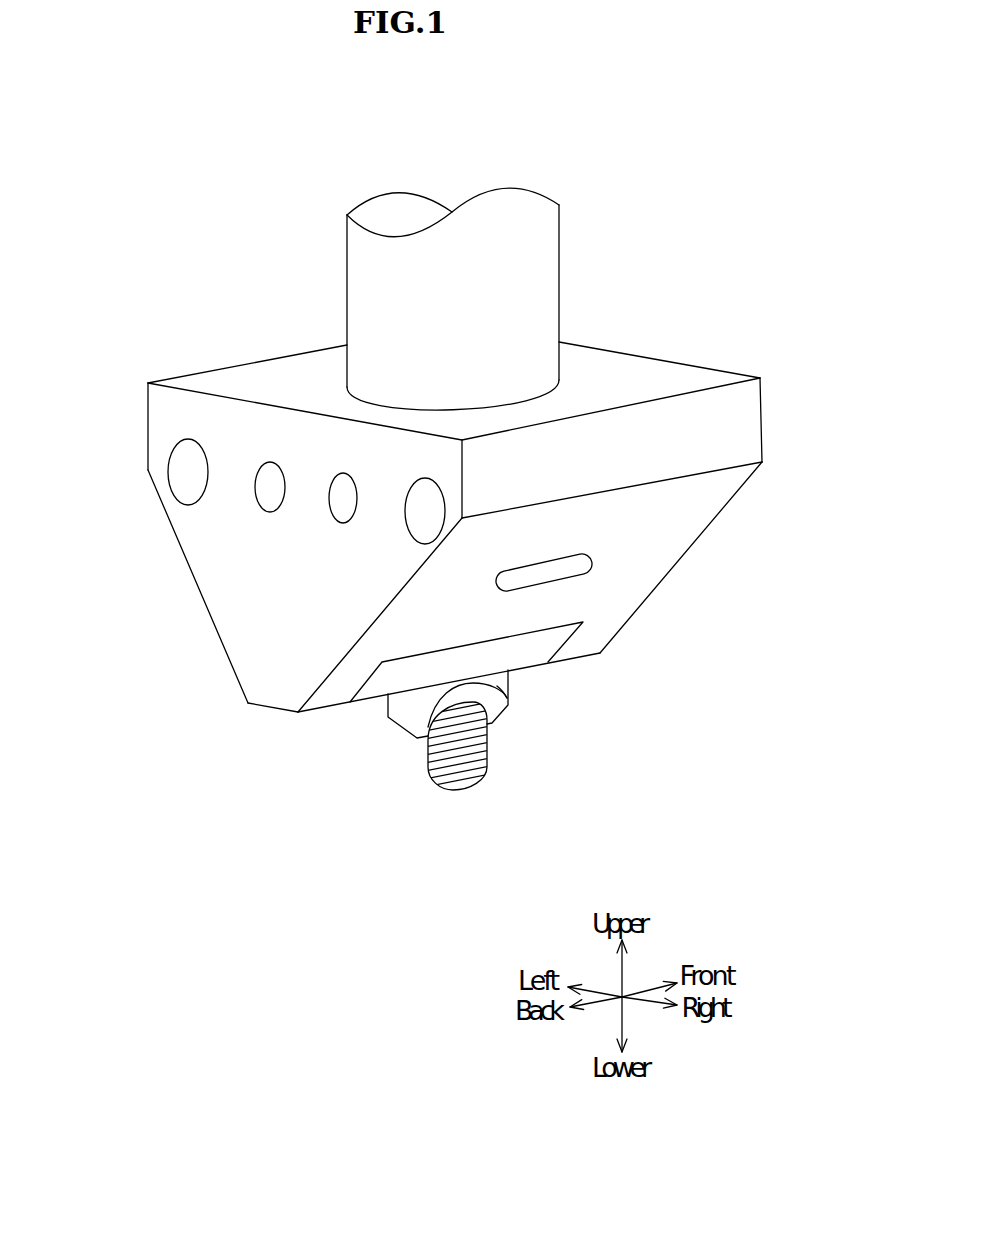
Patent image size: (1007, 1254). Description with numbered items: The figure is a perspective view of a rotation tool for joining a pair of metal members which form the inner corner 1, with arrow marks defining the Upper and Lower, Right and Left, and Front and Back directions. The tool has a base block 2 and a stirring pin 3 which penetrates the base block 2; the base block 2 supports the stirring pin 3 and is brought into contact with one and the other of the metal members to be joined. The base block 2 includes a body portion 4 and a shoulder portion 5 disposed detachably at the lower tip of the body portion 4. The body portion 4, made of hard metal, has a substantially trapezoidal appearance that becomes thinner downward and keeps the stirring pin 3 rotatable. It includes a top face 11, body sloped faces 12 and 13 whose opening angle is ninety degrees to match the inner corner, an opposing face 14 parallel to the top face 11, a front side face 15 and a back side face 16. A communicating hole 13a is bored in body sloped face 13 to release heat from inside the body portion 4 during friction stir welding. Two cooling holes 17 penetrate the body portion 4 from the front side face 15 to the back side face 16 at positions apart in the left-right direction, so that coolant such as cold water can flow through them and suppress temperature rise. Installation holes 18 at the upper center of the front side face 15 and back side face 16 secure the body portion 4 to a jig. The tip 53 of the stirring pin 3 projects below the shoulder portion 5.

The rotation tool for joining a pair of metal members which form the inner corner 1 is at (683, 238).
The base block 2 is at (773, 410).
The stirring pin 3 is at (566, 287).
The body portion 4 is at (680, 523).
The shoulder portion 5 is at (505, 683).
The top face 11 is at (217, 382).
The body sloped face 12 is at (208, 563).
The body sloped face 13 is at (648, 592).
The communicating hole 13a is at (570, 570).
The opposing face 14 is at (278, 700).
The front side face 15 is at (678, 384).
The back side face 16 is at (263, 650).
The cooling hole 17 is at (182, 460).
The installation hole 18 is at (340, 485).
The tip 53 is at (487, 752).